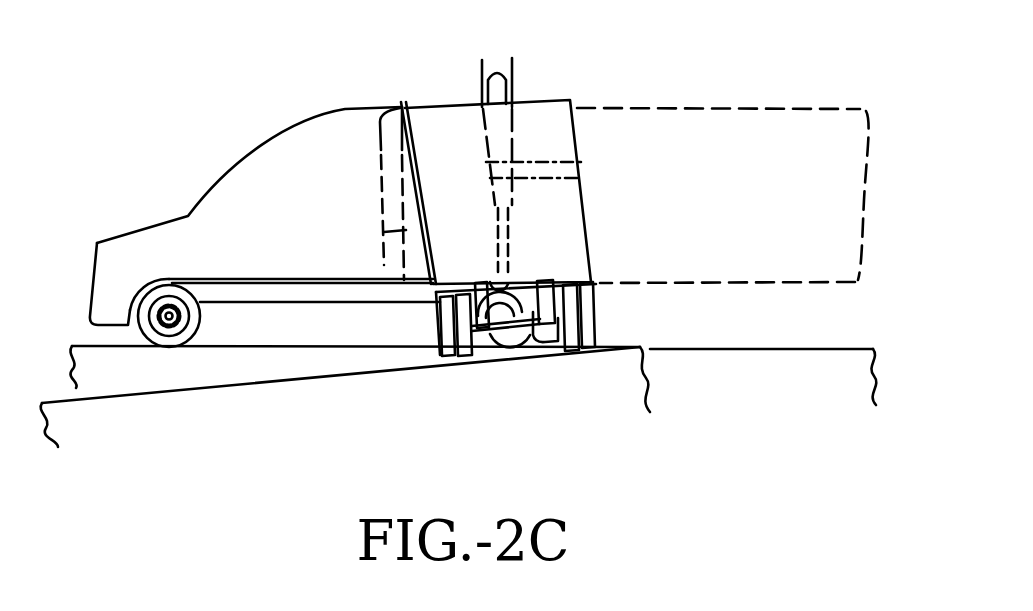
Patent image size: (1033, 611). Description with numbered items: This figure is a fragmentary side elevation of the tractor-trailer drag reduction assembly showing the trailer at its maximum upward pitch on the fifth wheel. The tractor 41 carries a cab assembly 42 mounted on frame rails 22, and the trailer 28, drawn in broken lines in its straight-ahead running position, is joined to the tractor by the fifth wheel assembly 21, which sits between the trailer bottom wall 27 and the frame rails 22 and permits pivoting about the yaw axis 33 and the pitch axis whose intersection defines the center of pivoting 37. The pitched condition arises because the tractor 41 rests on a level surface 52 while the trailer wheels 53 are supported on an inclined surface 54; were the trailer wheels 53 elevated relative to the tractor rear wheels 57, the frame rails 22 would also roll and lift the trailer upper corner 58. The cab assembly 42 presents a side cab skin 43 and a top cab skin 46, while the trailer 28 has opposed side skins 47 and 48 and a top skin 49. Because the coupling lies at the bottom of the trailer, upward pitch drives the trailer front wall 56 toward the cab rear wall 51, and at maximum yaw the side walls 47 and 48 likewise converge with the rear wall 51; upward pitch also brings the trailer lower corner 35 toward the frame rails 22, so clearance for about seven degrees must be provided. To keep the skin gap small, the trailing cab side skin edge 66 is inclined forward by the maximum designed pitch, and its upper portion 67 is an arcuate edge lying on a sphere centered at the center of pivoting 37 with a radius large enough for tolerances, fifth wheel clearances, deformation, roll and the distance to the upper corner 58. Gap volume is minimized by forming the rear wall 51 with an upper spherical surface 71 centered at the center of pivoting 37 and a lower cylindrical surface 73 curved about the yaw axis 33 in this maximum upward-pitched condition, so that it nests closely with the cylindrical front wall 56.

The fifth wheel assembly 21 is at (495, 266).
The frame rails 22 is at (250, 297).
The bottom wall 27 is at (595, 277).
The trailer 28 is at (461, 96).
The yaw axis 33 is at (582, 164).
The lower corner 35 is at (438, 285).
The center of pivoting 37 is at (524, 268).
The tractor 41 is at (225, 152).
The cab assembly 42 is at (275, 226).
The side cab skin 43 is at (293, 235).
The top cab skin 46 is at (370, 107).
The trailer side skin 47 is at (387, 172).
The trailer side skin 48 is at (593, 181).
The top skin 49 is at (542, 106).
The rear wall 51 is at (428, 200).
The level surface 52 is at (303, 330).
The trailer wheels 53 is at (595, 318).
The inclined surface 54 is at (372, 353).
The front wall 56 is at (392, 198).
The tractor rear wheels 57 is at (516, 355).
The upper corner 58 is at (402, 107).
The trailing cab side skin edge 66 is at (424, 152).
The upper portion of trailing cab side skin edge 67 is at (428, 110).
The upper spherical surface 71 is at (395, 100).
The lower cylindrical surface 73 is at (385, 232).